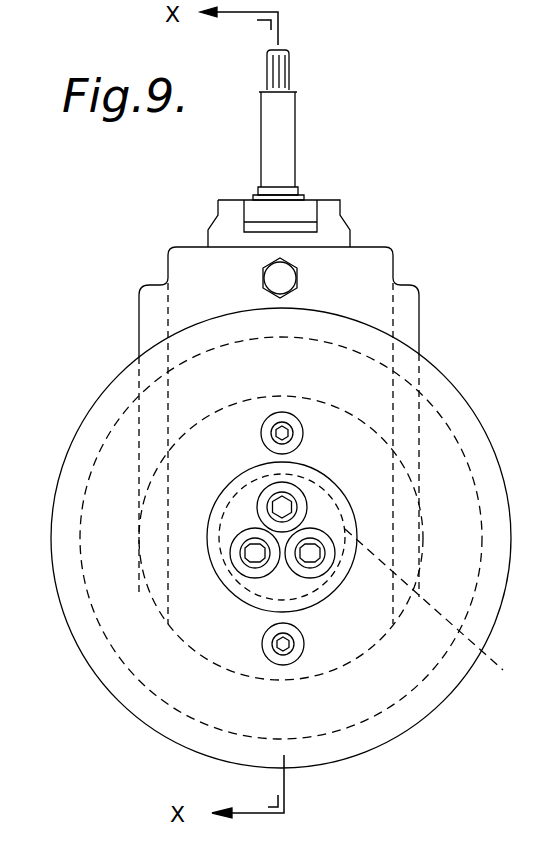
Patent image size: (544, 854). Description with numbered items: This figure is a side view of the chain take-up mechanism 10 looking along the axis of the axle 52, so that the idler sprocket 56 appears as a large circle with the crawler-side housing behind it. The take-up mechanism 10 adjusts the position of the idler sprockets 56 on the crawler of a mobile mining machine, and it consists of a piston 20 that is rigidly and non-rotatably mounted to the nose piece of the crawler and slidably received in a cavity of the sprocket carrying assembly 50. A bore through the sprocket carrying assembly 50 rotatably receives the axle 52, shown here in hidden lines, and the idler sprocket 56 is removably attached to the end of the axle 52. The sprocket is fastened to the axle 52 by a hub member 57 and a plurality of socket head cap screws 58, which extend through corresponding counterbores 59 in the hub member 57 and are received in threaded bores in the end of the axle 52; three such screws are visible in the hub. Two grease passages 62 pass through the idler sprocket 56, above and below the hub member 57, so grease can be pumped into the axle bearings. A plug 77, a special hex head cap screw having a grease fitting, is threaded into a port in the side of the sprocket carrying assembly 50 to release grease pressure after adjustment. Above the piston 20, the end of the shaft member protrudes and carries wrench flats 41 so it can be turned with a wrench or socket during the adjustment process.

The take-up mechanism 10 is at (133, 318).
The piston 20 is at (332, 230).
The wrench flats 41 is at (288, 70).
The sprocket carrying assembly 50 is at (412, 320).
The axle 52 is at (443, 608).
The idler sprocket 56 is at (128, 690).
The hub member 57 is at (298, 607).
The socket head cap screw 58 is at (238, 572).
The counterbore 59 is at (305, 505).
The grease passage 62 is at (283, 412).
The plug 77 is at (259, 278).